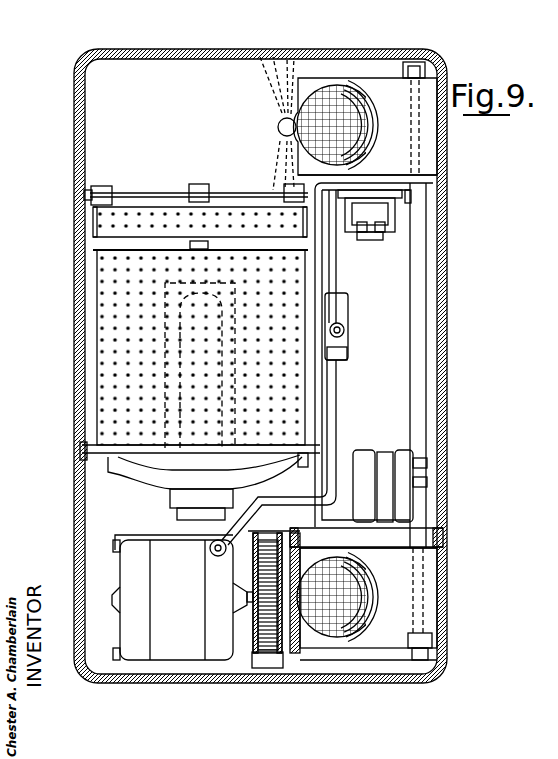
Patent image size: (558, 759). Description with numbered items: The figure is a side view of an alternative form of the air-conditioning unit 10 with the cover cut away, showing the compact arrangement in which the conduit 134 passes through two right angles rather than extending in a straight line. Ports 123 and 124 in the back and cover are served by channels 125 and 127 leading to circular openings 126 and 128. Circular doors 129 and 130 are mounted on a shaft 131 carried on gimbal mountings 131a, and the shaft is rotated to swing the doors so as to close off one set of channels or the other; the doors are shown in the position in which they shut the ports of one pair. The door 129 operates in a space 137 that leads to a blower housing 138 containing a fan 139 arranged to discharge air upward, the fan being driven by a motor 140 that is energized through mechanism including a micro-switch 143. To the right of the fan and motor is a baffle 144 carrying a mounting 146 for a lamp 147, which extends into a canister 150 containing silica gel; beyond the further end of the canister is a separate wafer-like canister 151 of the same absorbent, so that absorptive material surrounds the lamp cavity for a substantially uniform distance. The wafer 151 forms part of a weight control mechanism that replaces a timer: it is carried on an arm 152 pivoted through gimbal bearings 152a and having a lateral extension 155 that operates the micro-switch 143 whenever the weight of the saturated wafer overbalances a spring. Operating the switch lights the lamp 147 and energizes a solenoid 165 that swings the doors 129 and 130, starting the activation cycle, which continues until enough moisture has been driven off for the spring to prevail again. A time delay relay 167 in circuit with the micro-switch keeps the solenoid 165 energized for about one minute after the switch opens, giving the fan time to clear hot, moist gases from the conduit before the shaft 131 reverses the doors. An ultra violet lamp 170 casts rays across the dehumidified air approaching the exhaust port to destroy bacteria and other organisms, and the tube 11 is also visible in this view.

The cabinet 10 is at (432, 12).
The conduit 11 is at (440, 105).
The port 123 is at (337, 597).
The port 124 is at (337, 125).
The channel 125 is at (333, 84).
The opening 126 is at (345, 88).
The channel 127 is at (400, 137).
The opening 128 is at (366, 108).
The circular door 129 is at (368, 625).
The circular door 130 is at (367, 150).
The shaft 131 is at (420, 373).
The gimbal mounting 131a is at (426, 656).
The conduit 134 is at (94, 362).
The space 137 is at (383, 654).
The blower housing 138 is at (287, 668).
The fan 139 is at (252, 647).
The motor 140 is at (190, 635).
The micro-switch 143 is at (343, 318).
The baffle 144 is at (145, 484).
The mounting 146 is at (182, 498).
The lamp 147 is at (228, 462).
The canister 150 is at (103, 290).
The wafer-like canister 151 is at (127, 213).
The arm 152 is at (108, 183).
The gimbal bearings 152a is at (85, 196).
The lateral extension 155 is at (340, 265).
The solenoid 165 is at (364, 448).
The time delay relay 167 is at (376, 216).
The ultra violet lamp 170 is at (277, 130).